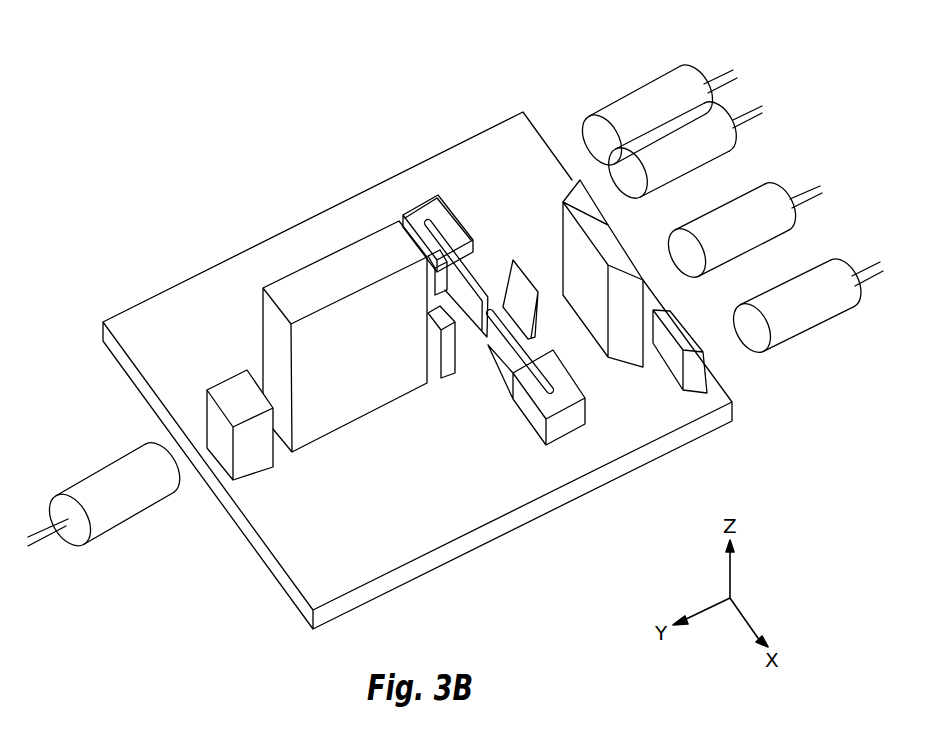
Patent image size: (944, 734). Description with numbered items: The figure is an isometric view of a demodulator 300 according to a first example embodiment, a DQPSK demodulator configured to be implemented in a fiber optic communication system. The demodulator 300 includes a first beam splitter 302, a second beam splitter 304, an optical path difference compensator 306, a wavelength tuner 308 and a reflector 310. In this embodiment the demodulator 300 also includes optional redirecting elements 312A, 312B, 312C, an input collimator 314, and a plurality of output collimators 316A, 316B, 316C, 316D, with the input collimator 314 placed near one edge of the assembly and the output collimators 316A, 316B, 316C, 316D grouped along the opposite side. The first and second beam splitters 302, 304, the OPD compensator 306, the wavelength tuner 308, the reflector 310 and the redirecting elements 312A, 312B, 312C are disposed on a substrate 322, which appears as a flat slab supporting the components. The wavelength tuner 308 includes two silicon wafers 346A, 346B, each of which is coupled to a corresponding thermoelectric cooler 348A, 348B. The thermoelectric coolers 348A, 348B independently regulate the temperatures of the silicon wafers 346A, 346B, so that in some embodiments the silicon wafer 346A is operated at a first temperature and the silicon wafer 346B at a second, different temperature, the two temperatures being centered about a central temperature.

The demodulator 300 is at (292, 128).
The first beam splitter 302 is at (227, 382).
The second beam splitter 304 is at (303, 265).
The optical path difference compensator 306 is at (445, 390).
The wavelength tuner 308 is at (463, 208).
The reflector 310 is at (528, 262).
The redirecting element 312A is at (575, 178).
The redirecting element 312B is at (597, 323).
The redirecting element 312C is at (675, 382).
The input collimator 314 is at (100, 472).
The output collimator 316A is at (633, 92).
The output collimator 316B is at (682, 113).
The output collimator 316C is at (730, 200).
The output collimator 316D is at (787, 290).
The substrate 322 is at (333, 583).
The silicon wafer 346A is at (512, 357).
The silicon wafer 346B is at (480, 280).
The thermoelectric cooler 348A is at (530, 427).
The thermoelectric cooler 348B is at (420, 200).